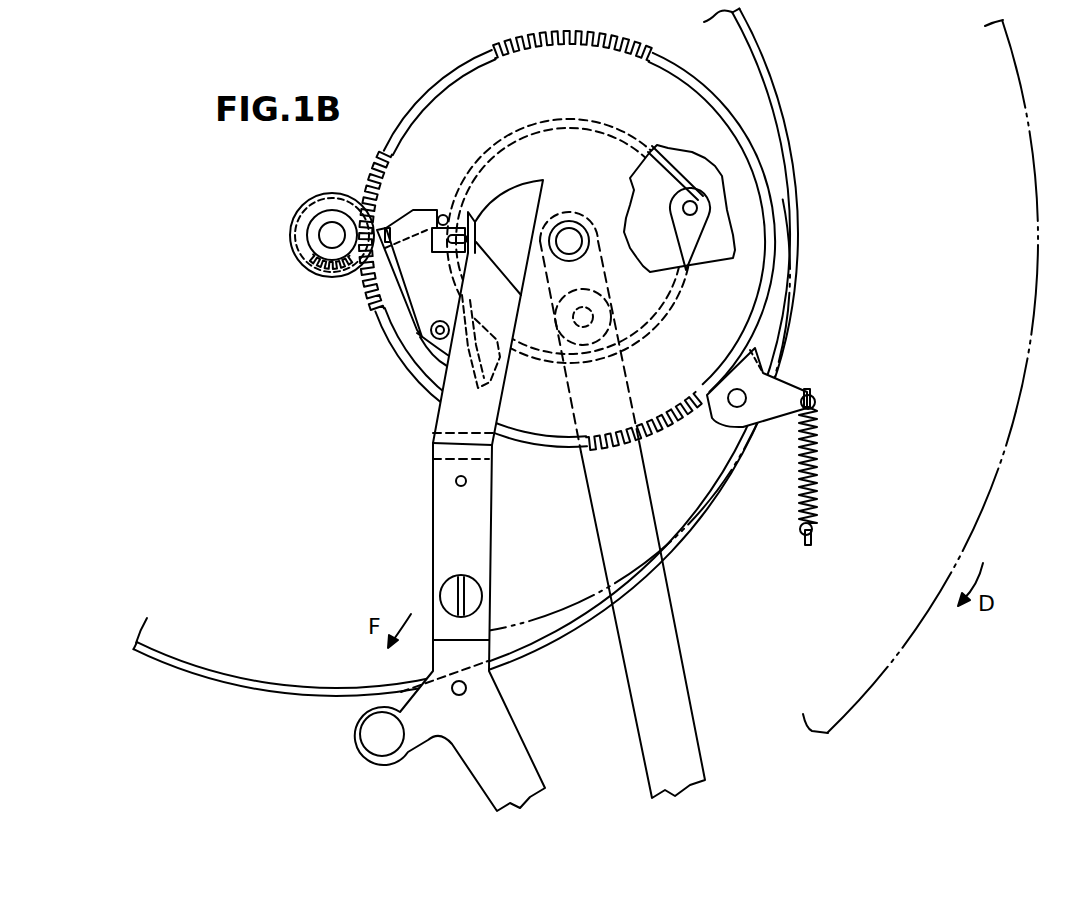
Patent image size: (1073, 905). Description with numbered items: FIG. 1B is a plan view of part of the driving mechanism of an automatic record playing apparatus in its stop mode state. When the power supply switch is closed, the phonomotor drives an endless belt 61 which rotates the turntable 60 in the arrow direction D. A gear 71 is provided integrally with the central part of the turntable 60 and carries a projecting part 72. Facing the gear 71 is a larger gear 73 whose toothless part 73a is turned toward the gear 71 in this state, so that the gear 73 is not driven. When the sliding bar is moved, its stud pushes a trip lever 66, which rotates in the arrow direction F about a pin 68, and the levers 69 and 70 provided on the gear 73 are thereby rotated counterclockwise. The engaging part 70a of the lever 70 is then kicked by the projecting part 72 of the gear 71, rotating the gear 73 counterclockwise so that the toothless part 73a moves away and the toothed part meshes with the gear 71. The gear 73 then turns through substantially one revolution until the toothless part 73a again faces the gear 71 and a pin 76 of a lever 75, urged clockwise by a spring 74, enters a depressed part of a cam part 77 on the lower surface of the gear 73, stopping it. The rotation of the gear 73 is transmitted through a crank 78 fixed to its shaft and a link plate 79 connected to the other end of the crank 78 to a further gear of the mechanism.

The turntable 60 is at (925, 621).
The endless belt 61 is at (259, 697).
The trip lever 66 is at (512, 738).
The pin 68 is at (466, 688).
The lever 69 is at (380, 327).
The lever 70 is at (422, 338).
The engaging part 70a is at (385, 224).
The gear 71 is at (312, 272).
The projecting part 72 is at (392, 272).
The gear 73 is at (519, 450).
The toothless part 73a is at (367, 274).
The spring 74 is at (820, 478).
The lever 75 is at (720, 415).
The pin 76 is at (687, 203).
The cam part 77 is at (688, 240).
The crank 78 is at (606, 264).
The link plate 79 is at (674, 651).